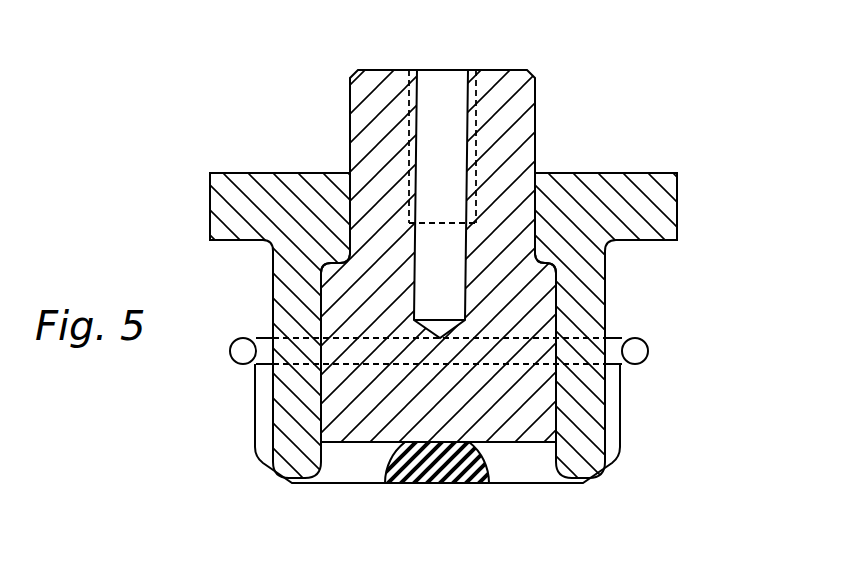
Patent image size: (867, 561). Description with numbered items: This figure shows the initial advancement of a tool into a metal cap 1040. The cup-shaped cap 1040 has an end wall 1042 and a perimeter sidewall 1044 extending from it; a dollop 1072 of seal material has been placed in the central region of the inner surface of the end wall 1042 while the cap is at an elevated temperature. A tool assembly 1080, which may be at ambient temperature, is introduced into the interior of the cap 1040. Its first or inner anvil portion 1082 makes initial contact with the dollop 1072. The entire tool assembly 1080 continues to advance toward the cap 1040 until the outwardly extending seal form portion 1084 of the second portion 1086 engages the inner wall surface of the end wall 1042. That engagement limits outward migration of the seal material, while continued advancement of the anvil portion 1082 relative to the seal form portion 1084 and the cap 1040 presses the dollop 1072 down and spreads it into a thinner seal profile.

The tool assembly 1080 is at (449, 305).
The second portion 1086 is at (245, 187).
The seal form portion 1084 is at (296, 402).
The anvil portion 1082 is at (483, 398).
The cap 1040 is at (488, 406).
The end wall 1042 is at (338, 484).
The perimeter sidewall 1044 is at (622, 403).
The dollop 1072 is at (427, 455).